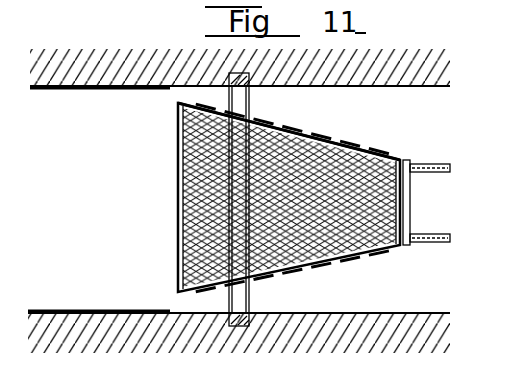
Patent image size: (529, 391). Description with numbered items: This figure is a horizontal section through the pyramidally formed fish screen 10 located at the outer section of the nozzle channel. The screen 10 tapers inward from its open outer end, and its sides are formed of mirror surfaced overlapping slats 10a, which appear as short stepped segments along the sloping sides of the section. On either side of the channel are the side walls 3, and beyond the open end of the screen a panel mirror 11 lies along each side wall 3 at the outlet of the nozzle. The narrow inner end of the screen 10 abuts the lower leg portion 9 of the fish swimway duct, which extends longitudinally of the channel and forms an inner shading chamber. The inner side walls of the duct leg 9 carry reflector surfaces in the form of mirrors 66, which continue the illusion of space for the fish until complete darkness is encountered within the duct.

The side wall 3 is at (211, 58).
The panel mirror 11 is at (122, 89).
The fish screen 10 is at (323, 268).
The overlapping slats 10a is at (341, 151).
The lower leg portion 9 is at (427, 249).
The mirror 66 is at (445, 176).